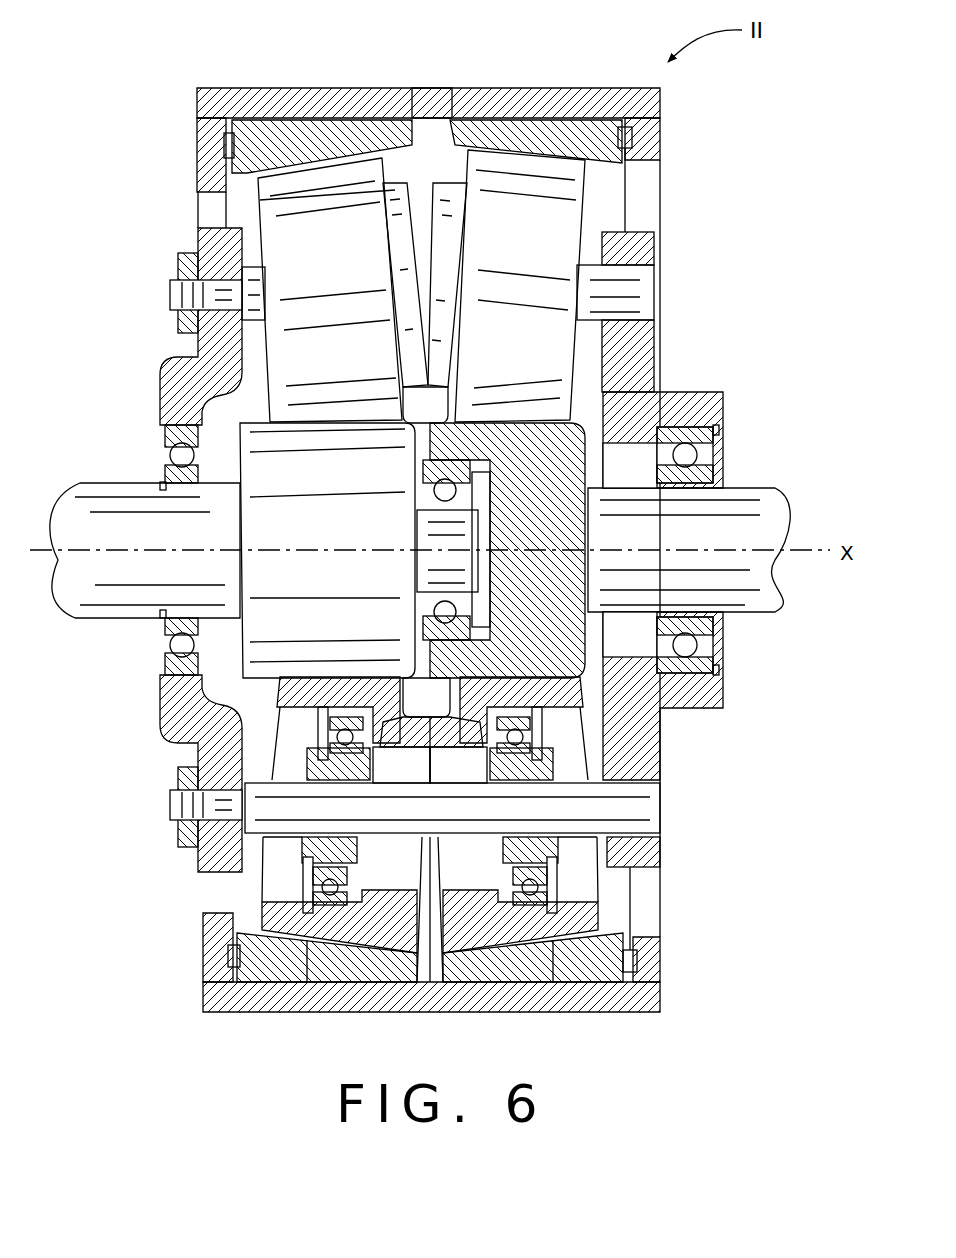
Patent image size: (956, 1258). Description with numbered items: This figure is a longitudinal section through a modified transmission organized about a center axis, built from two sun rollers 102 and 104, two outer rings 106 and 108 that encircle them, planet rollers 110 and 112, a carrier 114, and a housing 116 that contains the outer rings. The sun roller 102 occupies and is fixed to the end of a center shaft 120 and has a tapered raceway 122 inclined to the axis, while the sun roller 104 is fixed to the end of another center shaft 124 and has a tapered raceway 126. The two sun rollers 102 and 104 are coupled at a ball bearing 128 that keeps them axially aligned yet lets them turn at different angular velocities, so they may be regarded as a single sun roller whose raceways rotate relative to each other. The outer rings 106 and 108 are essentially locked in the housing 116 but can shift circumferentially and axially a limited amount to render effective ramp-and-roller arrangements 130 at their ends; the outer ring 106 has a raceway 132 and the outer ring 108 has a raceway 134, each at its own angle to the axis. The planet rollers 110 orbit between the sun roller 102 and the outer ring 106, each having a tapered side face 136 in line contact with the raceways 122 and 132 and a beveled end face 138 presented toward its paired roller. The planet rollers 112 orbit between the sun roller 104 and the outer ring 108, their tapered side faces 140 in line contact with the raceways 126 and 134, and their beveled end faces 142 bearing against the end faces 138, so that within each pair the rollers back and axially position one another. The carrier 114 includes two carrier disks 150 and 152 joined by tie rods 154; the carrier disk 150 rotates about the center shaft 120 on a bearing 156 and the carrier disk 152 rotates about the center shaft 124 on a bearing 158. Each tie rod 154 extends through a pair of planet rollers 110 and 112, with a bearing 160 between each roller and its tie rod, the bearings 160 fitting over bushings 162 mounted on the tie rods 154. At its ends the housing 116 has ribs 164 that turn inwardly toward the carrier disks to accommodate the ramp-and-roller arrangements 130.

The sun roller 102 is at (562, 468).
The sun roller 104 is at (268, 652).
The outer ring 106 is at (565, 135).
The outer ring 108 is at (286, 142).
The planet rollers 110 is at (478, 550).
The planet rollers 112 is at (275, 190).
The carrier 114 is at (638, 345).
The housing 116 is at (437, 108).
The center shaft 120 is at (745, 582).
The tapered raceway 122 is at (500, 420).
The center shaft 124 is at (100, 500).
The tapered raceway 126 is at (320, 420).
The ball bearing 128 is at (420, 618).
The ramp-and-roller arrangements 130 is at (215, 957).
The raceway 132 is at (525, 170).
The raceway 134 is at (305, 185).
The tapered side face 136 is at (525, 960).
The beveled end face 138 is at (436, 930).
The tapered side faces 140 is at (305, 950).
The beveled end faces 142 is at (420, 930).
The carrier disk 150 is at (636, 745).
The carrier disk 152 is at (182, 722).
The tie rods 154 is at (640, 805).
The bearing 156 is at (703, 458).
The bearing 158 is at (172, 455).
The bearings 160 is at (325, 885).
The bushings 162 is at (308, 852).
The ribs 164 is at (208, 140).